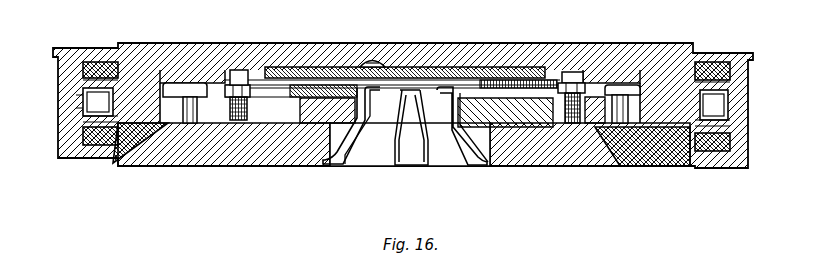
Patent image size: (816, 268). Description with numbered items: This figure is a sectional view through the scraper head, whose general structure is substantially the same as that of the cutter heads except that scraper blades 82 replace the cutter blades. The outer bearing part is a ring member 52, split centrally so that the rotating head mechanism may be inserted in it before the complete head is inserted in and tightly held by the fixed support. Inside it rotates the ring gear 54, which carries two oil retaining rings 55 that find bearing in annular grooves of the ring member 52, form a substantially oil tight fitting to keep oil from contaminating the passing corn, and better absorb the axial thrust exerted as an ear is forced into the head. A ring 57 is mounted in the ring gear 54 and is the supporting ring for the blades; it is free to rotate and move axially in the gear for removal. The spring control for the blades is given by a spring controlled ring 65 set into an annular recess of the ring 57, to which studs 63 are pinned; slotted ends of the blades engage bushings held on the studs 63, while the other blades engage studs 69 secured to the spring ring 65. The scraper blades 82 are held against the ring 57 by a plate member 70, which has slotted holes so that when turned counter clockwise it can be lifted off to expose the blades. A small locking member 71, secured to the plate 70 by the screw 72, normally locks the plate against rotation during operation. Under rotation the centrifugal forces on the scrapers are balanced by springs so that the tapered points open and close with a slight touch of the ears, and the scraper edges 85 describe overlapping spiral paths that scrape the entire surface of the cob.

The ring member 52 is at (727, 115).
The ring gear 54 is at (673, 130).
The oil retaining rings 55 is at (707, 73).
The ring 57 is at (597, 113).
The stud 63 is at (225, 120).
The spring controlled ring 65 is at (216, 78).
The studs 69 is at (186, 82).
The plate member 70 is at (547, 72).
The locking member 71 is at (338, 65).
The screw 72 is at (365, 60).
The scraper blades 82 is at (413, 148).
The scraper edges 85 is at (402, 96).